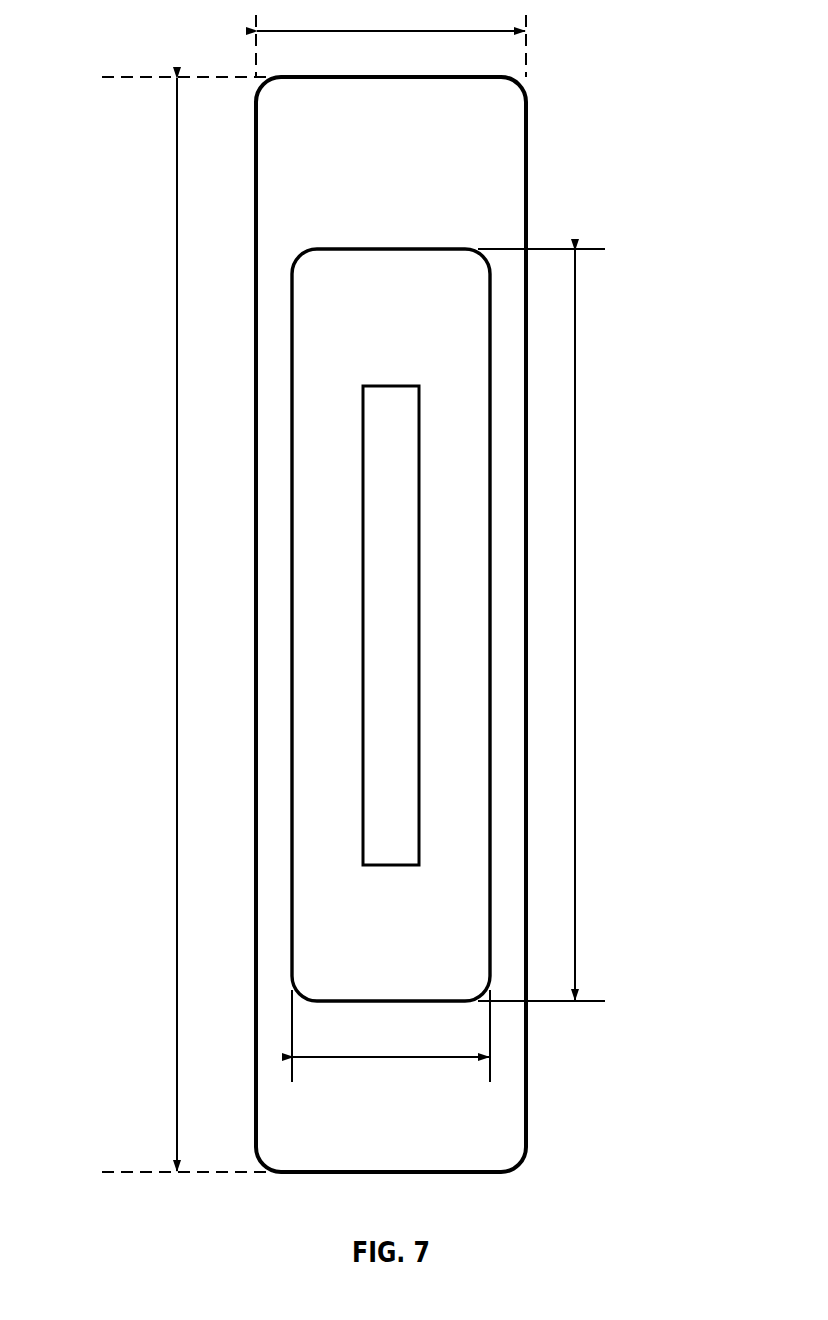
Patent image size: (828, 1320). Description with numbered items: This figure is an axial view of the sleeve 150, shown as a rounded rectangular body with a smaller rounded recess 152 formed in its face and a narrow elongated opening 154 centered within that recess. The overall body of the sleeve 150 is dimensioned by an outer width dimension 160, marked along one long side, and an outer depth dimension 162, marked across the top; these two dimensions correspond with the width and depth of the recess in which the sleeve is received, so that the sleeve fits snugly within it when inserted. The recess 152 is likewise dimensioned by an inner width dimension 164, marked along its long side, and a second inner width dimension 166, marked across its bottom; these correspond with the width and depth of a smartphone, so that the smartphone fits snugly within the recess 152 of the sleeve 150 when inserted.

The sleeve 150 is at (527, 157).
The recess 152 is at (313, 342).
The slot 154 is at (380, 562).
The outer width dimension 160 is at (176, 625).
The outer depth dimension 162 is at (390, 31).
The inner width dimension 164 is at (576, 625).
The inner width dimension (second) 166 is at (388, 1060).